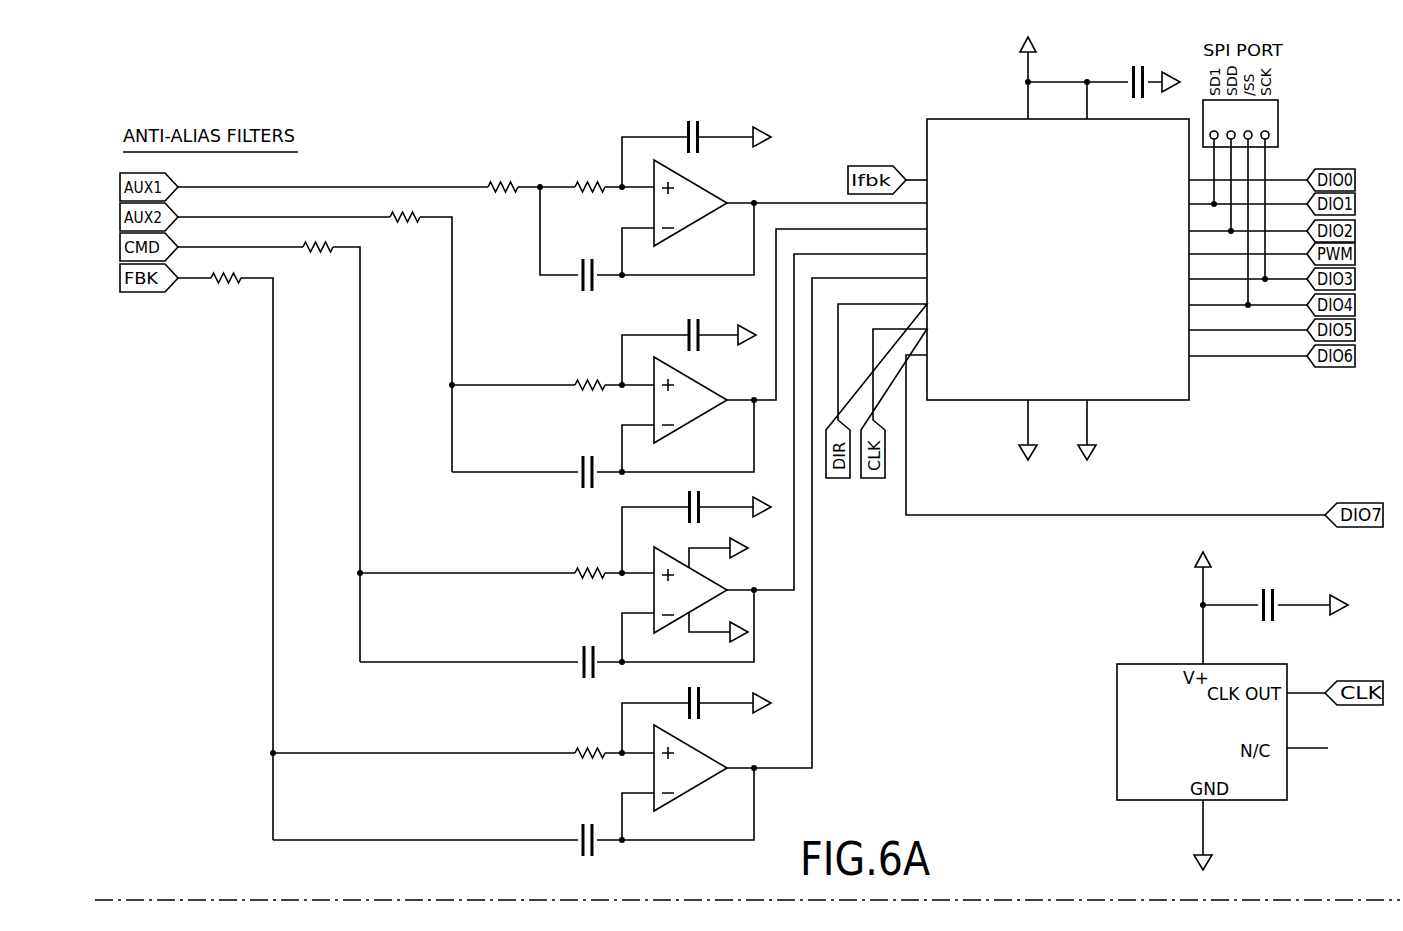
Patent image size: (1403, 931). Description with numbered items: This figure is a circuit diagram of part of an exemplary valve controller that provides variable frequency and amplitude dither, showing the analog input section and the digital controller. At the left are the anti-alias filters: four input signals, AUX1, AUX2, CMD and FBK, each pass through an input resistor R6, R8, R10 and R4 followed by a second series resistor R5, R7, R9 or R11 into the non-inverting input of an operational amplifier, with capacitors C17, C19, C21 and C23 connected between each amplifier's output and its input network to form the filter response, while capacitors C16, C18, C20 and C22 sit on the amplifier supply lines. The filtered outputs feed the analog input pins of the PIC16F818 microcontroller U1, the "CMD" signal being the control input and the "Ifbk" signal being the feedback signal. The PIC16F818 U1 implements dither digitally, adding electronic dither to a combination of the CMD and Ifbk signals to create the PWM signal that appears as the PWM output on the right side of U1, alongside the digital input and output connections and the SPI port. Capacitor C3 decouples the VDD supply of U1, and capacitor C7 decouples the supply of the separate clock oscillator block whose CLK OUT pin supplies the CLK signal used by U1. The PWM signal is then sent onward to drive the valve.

The resistor R4 is at (503, 204).
The resistor R5 is at (590, 204).
The resistor R6 is at (405, 234).
The resistor R7 is at (590, 402).
The resistor R8 is at (318, 264).
The resistor R9 is at (590, 590).
The resistor R10 is at (227, 294).
The resistor R11 is at (587, 769).
The capacitor C3 is at (1141, 71).
The capacitor C7 is at (1283, 596).
The capacitor C16 is at (710, 150).
The capacitor C17 is at (590, 263).
The capacitor C18 is at (710, 348).
The capacitor C19 is at (590, 461).
The capacitor C20 is at (673, 514).
The capacitor C21 is at (590, 651).
The capacitor C22 is at (710, 716).
The capacitor C23 is at (590, 829).
The PIC16F818 U1 is at (1058, 245).